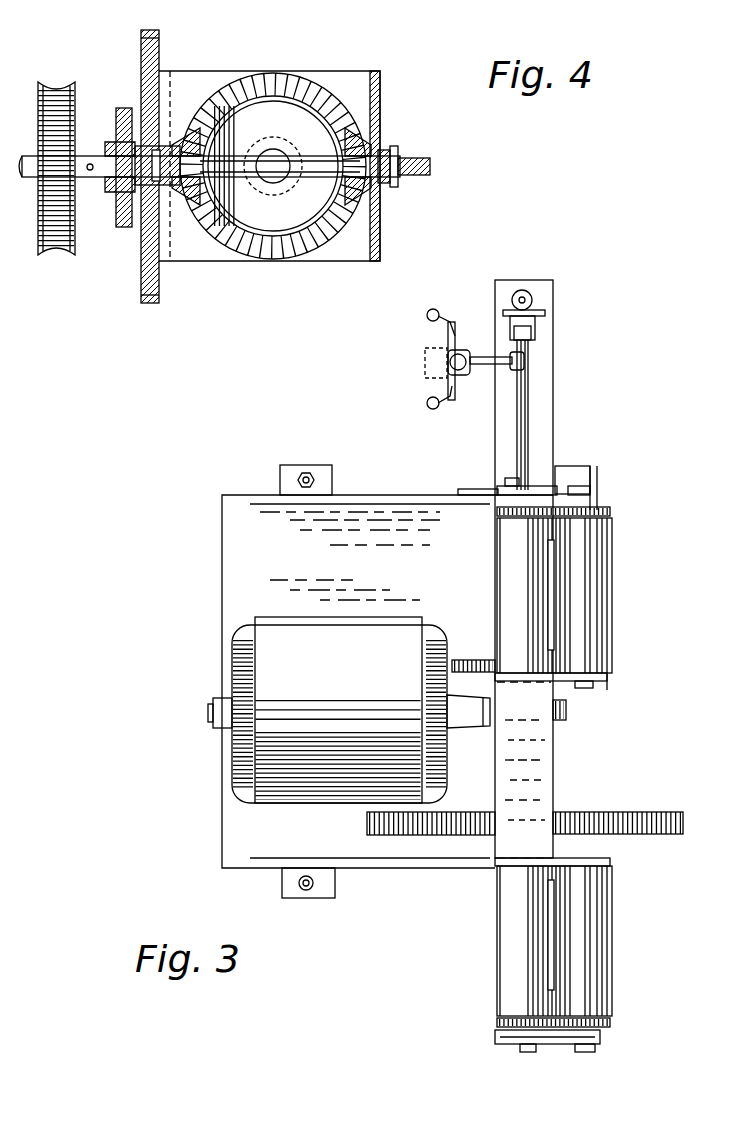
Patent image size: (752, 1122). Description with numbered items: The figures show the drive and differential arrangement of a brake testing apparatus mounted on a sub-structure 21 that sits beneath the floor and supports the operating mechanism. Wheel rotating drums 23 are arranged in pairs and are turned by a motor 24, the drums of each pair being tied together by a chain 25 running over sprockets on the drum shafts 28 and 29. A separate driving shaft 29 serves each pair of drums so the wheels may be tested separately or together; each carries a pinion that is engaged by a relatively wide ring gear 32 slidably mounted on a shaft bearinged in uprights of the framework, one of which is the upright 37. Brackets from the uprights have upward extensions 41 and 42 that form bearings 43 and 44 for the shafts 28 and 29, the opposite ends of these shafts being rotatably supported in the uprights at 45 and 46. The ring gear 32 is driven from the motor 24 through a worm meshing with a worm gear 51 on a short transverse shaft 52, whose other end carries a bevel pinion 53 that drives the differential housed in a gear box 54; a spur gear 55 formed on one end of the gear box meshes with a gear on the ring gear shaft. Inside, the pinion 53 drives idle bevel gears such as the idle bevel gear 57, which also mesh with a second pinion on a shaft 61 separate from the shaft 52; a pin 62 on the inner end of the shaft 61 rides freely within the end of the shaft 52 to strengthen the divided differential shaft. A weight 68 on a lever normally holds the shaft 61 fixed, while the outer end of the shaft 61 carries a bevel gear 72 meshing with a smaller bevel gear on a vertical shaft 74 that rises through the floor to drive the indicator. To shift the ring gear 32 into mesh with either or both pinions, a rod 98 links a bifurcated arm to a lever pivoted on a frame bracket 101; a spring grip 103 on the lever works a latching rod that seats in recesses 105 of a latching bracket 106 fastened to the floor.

In FIG. 3, the sub-structure 21 is at (240, 582).
In FIG. 3, the wheel rotating drums 23 is at (527, 617).
In FIG. 3, the motor 24 is at (300, 804).
In FIG. 3, the chain 25 is at (600, 514).
In FIG. 3, the drum shaft 28 is at (588, 686).
In FIG. 3, the driving shaft 29 is at (527, 1052).
In FIG. 3, the ring gear 32 is at (628, 812).
In FIG. 4, the upright 37 is at (126, 228).
In FIG. 3, the upward extension 41 is at (562, 1038).
In FIG. 3, the upward extension 42 is at (558, 494).
In FIG. 3, the bearing 43 is at (600, 1037).
In FIG. 3, the bearing 44 is at (518, 1046).
In FIG. 3, the bearing support 45 is at (612, 862).
In FIG. 3, the bearing support 46 is at (608, 676).
In FIG. 4, the worm gear 51 is at (58, 100).
In FIG. 3, the worm gear 51 is at (567, 710).
In FIG. 4, the transverse shaft 52 is at (34, 179).
In FIG. 4, the bevel pinion 53 is at (372, 142).
In FIG. 4, the gear box 54 is at (346, 249).
In FIG. 4, the spur gear 55 is at (152, 303).
In FIG. 4, the idle bevel gear 57 is at (290, 94).
In FIG. 4, the shaft 61 is at (322, 175).
In FIG. 3, the shaft 61 is at (530, 394).
In FIG. 4, the pin 62 is at (182, 150).
In FIG. 3, the weight 68 is at (585, 480).
In FIG. 3, the bevel gear 72 is at (536, 318).
In FIG. 3, the vertical shaft 74 is at (524, 292).
In FIG. 3, the rod 98 is at (527, 426).
In FIG. 3, the frame bracket 101 is at (425, 364).
In FIG. 3, the spring grip 103 is at (459, 352).
In FIG. 3, the recesses 105 is at (458, 374).
In FIG. 3, the latching bracket 106 is at (437, 409).